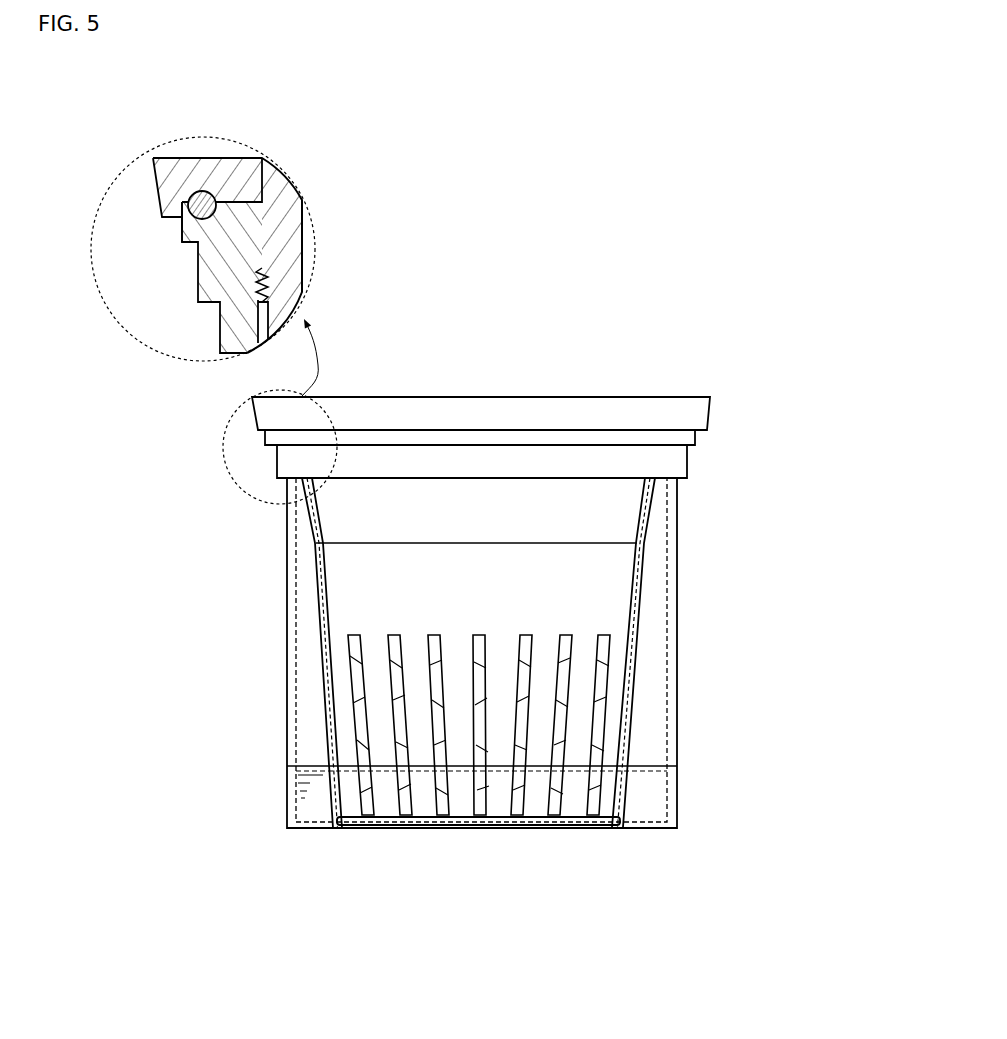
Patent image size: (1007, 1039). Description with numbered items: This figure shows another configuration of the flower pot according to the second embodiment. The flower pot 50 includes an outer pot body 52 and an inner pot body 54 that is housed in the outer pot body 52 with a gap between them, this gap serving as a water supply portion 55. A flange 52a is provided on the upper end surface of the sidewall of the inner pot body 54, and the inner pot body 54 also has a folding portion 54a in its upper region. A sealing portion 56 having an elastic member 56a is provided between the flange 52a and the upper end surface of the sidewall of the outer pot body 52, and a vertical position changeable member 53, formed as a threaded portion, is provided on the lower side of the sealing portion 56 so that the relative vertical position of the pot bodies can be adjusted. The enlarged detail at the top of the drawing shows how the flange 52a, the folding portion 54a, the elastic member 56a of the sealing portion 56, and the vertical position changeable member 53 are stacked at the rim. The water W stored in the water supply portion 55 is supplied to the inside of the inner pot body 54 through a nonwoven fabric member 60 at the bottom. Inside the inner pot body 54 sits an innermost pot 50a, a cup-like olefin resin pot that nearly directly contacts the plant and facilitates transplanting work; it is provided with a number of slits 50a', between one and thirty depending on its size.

The flower pot 50 is at (698, 362).
The innermost pot 50a is at (545, 653).
The slit 50a' is at (571, 725).
The outer pot body 52 is at (198, 282).
The flange 52a is at (181, 231).
The vertical position changeable member 53 is at (265, 270).
The inner pot body 54 is at (283, 203).
The folding portion 54a is at (237, 180).
The water supply portion 55 is at (264, 332).
The sealing portion 56 is at (200, 132).
The elastic member 56a is at (196, 158).
The nonwoven fabric member 60 is at (573, 826).
The water W is at (307, 808).